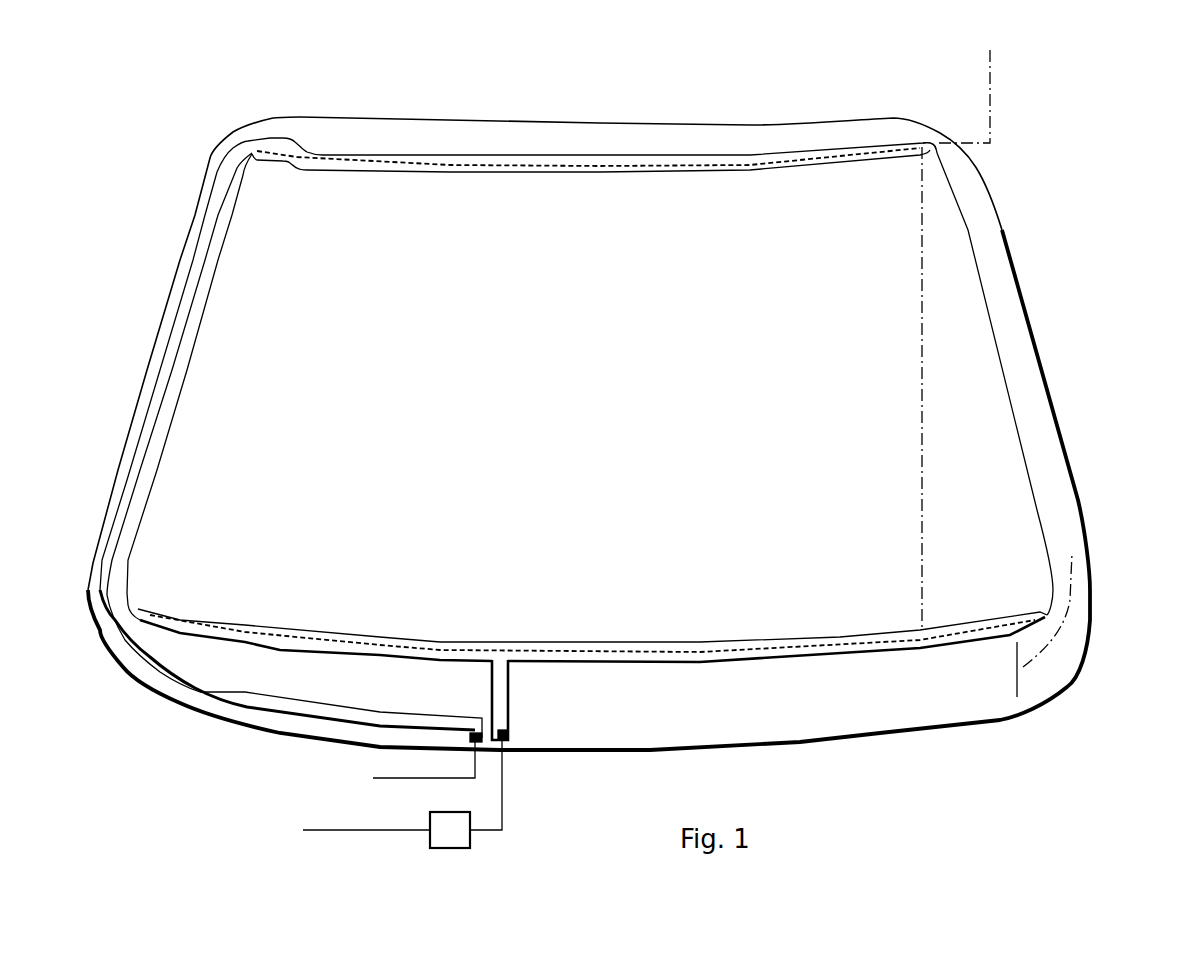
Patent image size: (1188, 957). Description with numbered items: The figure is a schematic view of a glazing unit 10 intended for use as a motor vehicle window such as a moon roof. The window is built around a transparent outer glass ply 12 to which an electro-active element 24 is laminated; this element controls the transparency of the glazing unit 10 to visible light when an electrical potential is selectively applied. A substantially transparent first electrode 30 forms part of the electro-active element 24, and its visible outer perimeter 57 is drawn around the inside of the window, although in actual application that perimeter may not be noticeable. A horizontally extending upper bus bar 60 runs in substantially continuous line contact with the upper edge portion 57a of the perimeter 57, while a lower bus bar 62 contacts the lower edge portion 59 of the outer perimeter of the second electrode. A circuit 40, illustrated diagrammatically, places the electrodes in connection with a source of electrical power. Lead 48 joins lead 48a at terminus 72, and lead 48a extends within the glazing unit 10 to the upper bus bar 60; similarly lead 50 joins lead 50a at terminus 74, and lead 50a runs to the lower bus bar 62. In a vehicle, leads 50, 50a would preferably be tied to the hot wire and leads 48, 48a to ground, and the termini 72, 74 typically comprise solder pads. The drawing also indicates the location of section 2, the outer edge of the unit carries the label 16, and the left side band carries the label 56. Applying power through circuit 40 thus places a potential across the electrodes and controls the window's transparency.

The glazing unit 10 is at (652, 117).
The transparent outer glass ply 12 is at (1035, 425).
The peripheral edge 16 is at (1075, 578).
The electro-active element 24 is at (735, 605).
The first electrode 30 is at (963, 290).
The circuit 40 is at (512, 787).
The electrical lead 48 is at (395, 780).
The lead 48a is at (290, 715).
The electrical lead 50 is at (348, 832).
The lead 50a is at (512, 678).
The left side band 56 is at (207, 303).
The outer perimeter 57 is at (998, 348).
The upper edge portion 57a is at (567, 170).
The lower edge portion 59 is at (862, 650).
The upper bus bar 60 is at (762, 155).
The lower bus bar 62 is at (478, 648).
The terminus 72 is at (470, 742).
The terminus 74 is at (508, 735).
The section line 2- 2 is at (933, 78).